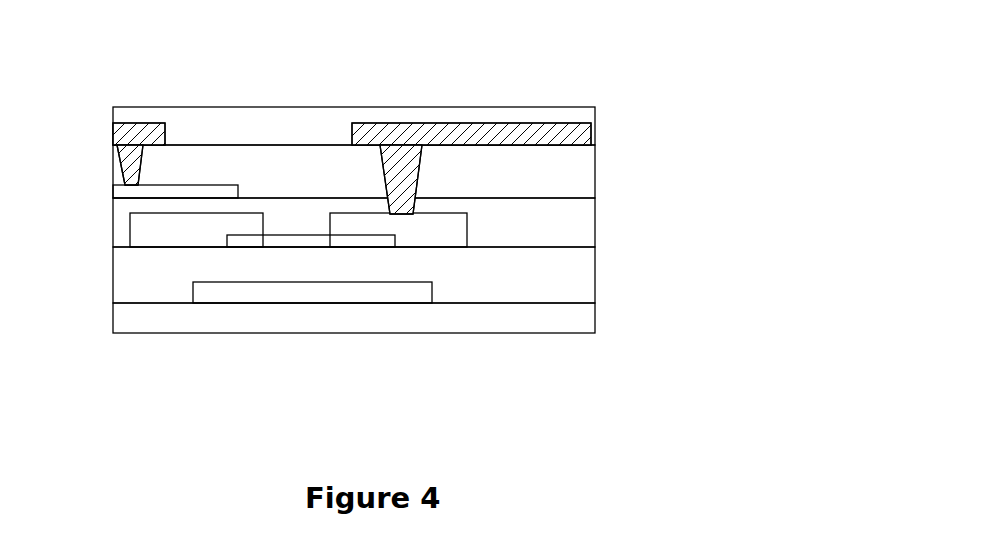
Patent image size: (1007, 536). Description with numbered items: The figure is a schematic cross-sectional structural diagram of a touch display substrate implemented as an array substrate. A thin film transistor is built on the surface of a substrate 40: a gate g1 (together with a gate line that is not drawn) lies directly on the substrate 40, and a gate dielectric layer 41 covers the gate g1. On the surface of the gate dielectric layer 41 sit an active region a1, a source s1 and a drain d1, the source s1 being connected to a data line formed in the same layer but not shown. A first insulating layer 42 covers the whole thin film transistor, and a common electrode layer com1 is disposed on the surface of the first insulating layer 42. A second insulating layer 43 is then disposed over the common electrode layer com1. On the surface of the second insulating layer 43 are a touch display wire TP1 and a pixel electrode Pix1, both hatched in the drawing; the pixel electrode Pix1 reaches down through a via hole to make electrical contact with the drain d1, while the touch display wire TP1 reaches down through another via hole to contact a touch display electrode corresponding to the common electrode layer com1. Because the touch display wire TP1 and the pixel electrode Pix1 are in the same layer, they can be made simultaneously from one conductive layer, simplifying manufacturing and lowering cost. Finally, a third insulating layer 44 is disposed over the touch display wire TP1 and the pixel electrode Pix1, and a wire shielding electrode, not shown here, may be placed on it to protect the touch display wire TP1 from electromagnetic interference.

The substrate 40 is at (403, 333).
The gate dielectric layer 41 is at (577, 276).
The first insulating layer 42 is at (577, 227).
The second insulating layer 43 is at (563, 167).
The third insulating layer 44 is at (245, 120).
The gate g1 is at (335, 292).
The active region a1 is at (292, 243).
The source s1 is at (168, 227).
The drain d1 is at (435, 232).
The common electrode layer com1 is at (120, 188).
The touch display wire TP1 is at (146, 128).
The pixel electrode Pix1 is at (487, 122).